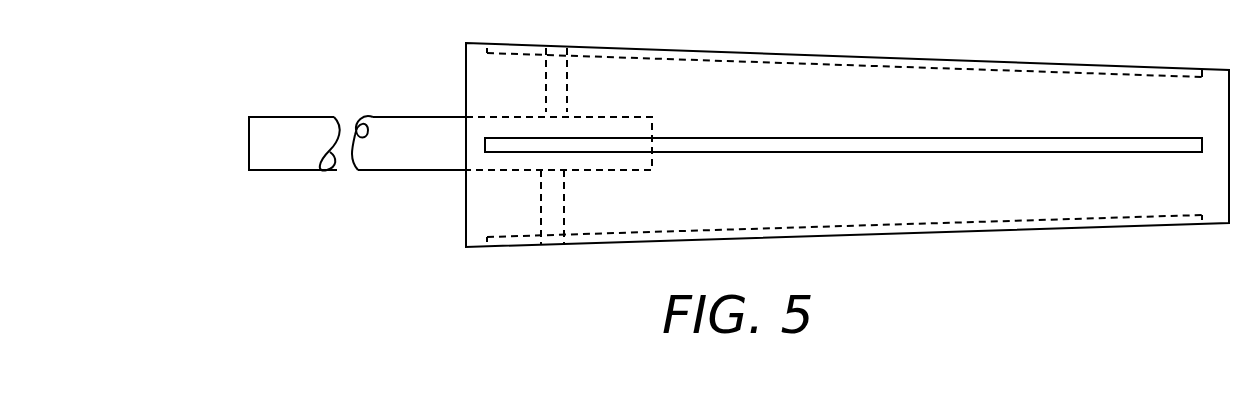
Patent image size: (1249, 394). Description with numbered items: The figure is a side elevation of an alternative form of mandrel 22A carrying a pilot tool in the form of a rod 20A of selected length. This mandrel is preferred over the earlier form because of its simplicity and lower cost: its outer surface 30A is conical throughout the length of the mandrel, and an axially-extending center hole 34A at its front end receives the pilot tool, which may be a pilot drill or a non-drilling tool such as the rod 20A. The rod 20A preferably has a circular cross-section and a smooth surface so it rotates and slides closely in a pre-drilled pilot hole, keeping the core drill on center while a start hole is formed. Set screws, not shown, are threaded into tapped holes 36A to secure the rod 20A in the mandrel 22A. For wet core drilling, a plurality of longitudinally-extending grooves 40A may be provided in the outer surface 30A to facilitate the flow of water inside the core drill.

The rod 20A is at (401, 113).
The mandrel 22A is at (856, 55).
The outer surface 30A is at (1000, 62).
The center hole 34A is at (613, 117).
The tapped holes 36A is at (570, 80).
The grooves 40A is at (1112, 63).